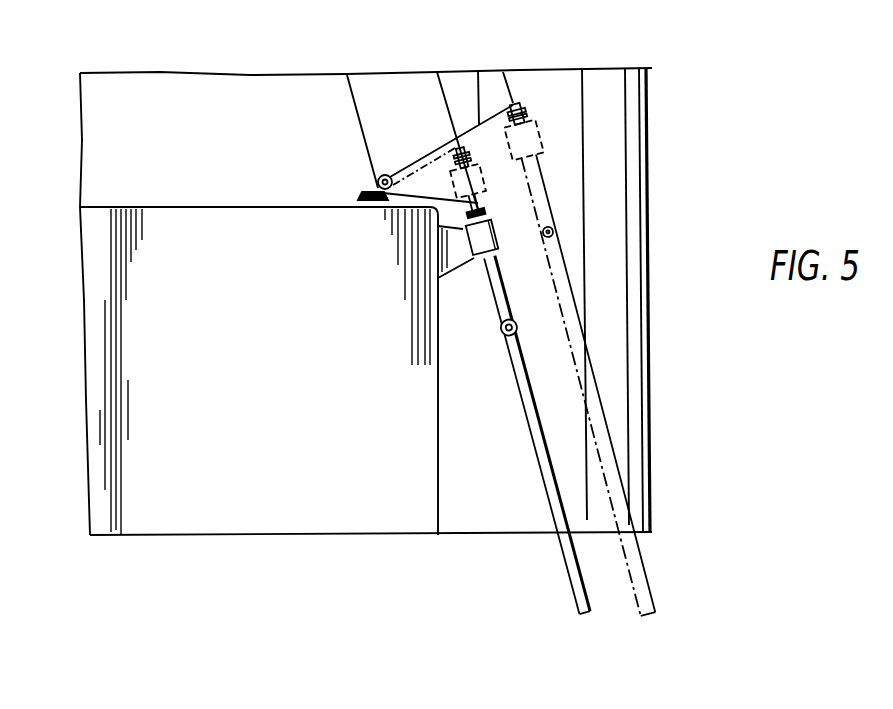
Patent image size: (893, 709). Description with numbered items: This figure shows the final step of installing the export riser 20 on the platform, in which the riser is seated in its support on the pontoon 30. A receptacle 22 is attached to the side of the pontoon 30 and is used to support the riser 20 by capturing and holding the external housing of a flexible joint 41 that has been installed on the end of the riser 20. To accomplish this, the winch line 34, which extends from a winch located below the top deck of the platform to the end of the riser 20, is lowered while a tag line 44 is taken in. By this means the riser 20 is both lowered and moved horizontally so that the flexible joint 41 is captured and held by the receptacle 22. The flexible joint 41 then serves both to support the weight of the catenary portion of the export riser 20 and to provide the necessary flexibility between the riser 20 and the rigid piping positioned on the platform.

The pontoon 30 is at (115, 444).
The second hoisting line 34 is at (442, 90).
The tag line 44 is at (366, 148).
The flexible joint 41 is at (545, 133).
The receptacle 22 is at (475, 242).
The export riser 20 is at (547, 208).